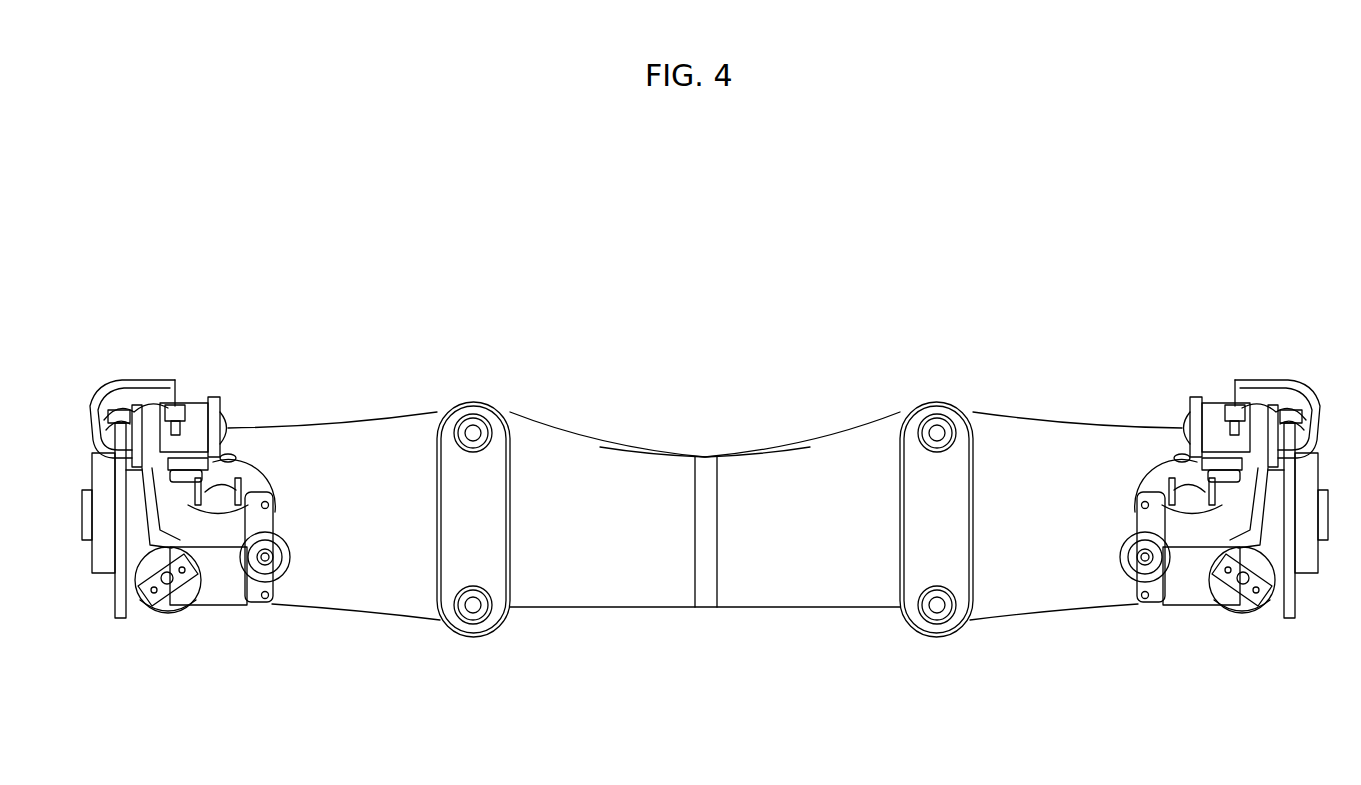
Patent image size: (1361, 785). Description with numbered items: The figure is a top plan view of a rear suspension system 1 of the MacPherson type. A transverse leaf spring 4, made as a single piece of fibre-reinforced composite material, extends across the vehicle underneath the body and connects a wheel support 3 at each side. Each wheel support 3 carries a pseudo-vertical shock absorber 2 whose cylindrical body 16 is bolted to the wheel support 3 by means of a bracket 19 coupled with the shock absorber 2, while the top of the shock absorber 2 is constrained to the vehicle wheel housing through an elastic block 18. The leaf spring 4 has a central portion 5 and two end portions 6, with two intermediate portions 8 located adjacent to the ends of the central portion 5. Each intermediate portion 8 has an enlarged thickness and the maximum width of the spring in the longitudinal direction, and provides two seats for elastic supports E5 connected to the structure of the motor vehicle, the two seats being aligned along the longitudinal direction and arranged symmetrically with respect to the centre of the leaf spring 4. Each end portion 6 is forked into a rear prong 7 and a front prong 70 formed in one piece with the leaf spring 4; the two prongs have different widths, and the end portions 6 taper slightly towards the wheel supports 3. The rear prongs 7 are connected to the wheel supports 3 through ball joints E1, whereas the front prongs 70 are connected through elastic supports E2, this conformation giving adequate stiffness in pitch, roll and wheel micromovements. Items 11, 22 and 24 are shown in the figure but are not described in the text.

The rear suspension system 1 is at (710, 306).
The shock absorber 2 is at (283, 520).
The wheel support 3 is at (97, 378).
The leaf spring 4 is at (650, 612).
The central portion 5 is at (785, 465).
The end portion 6 is at (385, 597).
The rear prong 7 is at (207, 583).
The intermediate portion 8 is at (485, 520).
The bolt 11 is at (468, 433).
The cylindrical body 16 is at (223, 548).
The elastic block 18 is at (287, 553).
The bracket 19 is at (245, 486).
The wheel hub 22 is at (187, 592).
The brake carrier 24 is at (142, 557).
The front prong 70 is at (247, 440).
The ball joint E1 is at (150, 607).
The elastic support E2 is at (231, 458).
The elastic support E5 is at (488, 428).